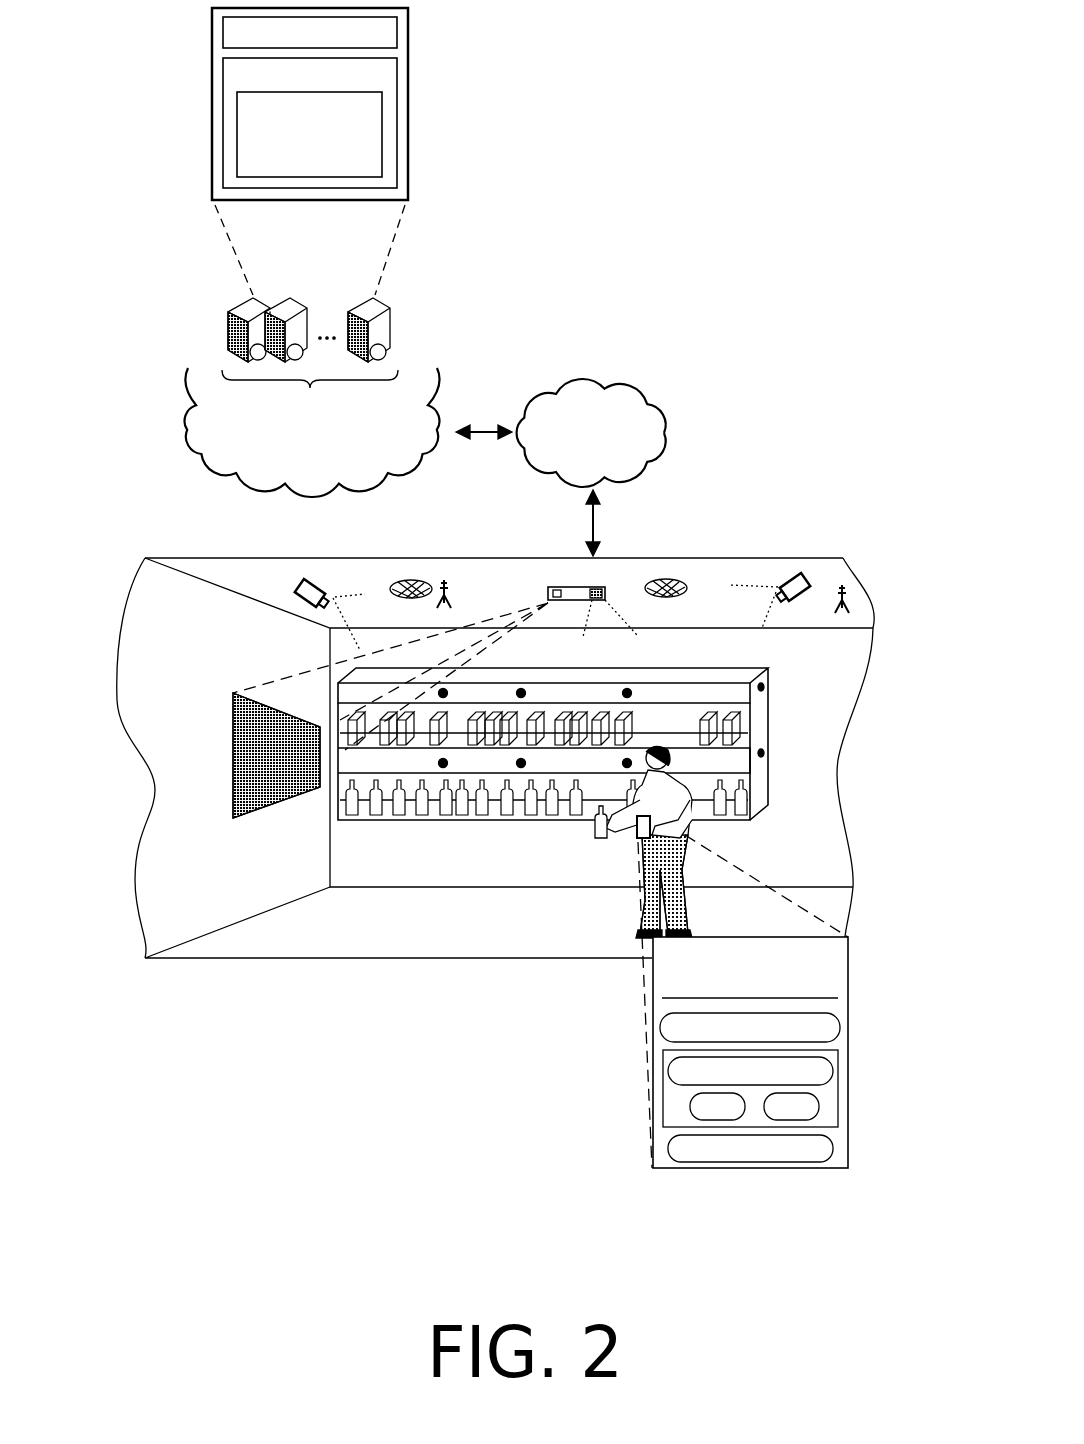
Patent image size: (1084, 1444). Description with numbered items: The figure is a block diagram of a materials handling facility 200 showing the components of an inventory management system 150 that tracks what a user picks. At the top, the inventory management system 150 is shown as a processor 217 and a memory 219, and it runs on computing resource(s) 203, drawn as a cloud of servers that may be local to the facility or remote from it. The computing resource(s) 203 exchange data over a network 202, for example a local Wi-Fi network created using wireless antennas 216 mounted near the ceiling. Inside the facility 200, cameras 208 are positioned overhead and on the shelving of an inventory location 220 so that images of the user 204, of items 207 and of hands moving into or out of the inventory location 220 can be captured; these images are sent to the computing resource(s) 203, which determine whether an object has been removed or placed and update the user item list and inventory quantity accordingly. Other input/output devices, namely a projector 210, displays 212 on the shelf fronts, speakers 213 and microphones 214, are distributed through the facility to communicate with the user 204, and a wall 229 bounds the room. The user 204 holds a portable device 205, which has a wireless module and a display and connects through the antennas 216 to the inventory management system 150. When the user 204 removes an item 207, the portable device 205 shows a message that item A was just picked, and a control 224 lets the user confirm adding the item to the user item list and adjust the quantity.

The materials handling facility 200 is at (848, 558).
The network 202 is at (591, 433).
The computing resource(s) 203 is at (306, 376).
The user 204 is at (692, 830).
The portable device 205 is at (637, 838).
The item 207 is at (592, 838).
The camera 208 is at (310, 580).
The projector 210 is at (575, 585).
The display 212 is at (540, 729).
The speaker 213 is at (667, 582).
The microphone 214 is at (397, 583).
The wireless antenna 216 is at (442, 583).
The processor 217 is at (310, 104).
The memory 219 is at (310, 123).
The inventory management system 150 is at (309, 134).
The inventory shelf 220 is at (478, 822).
The control 224 is at (845, 1028).
The display / wall 229 is at (185, 897).